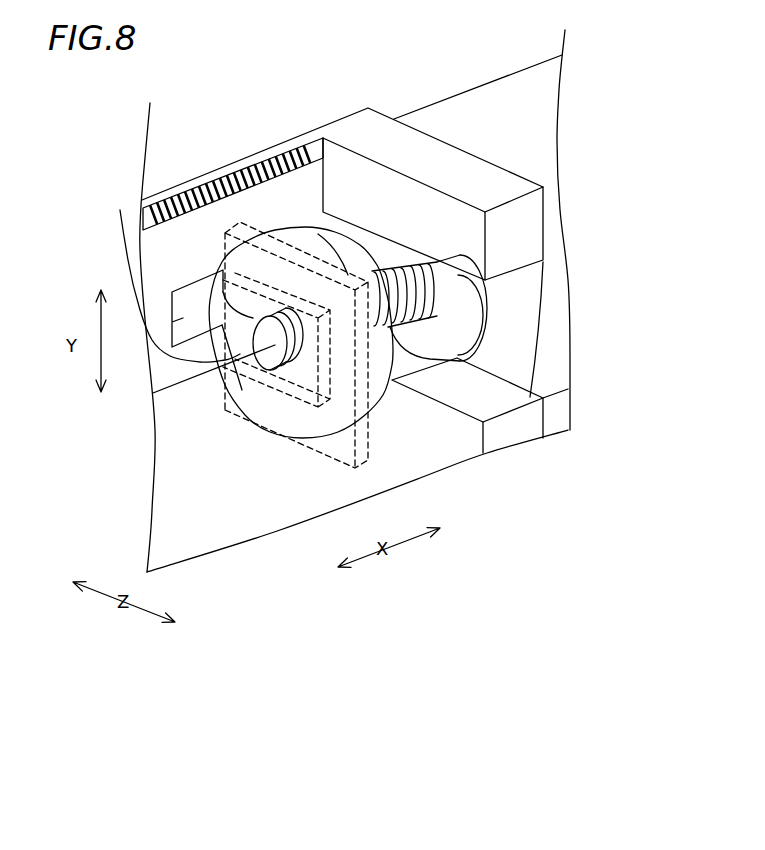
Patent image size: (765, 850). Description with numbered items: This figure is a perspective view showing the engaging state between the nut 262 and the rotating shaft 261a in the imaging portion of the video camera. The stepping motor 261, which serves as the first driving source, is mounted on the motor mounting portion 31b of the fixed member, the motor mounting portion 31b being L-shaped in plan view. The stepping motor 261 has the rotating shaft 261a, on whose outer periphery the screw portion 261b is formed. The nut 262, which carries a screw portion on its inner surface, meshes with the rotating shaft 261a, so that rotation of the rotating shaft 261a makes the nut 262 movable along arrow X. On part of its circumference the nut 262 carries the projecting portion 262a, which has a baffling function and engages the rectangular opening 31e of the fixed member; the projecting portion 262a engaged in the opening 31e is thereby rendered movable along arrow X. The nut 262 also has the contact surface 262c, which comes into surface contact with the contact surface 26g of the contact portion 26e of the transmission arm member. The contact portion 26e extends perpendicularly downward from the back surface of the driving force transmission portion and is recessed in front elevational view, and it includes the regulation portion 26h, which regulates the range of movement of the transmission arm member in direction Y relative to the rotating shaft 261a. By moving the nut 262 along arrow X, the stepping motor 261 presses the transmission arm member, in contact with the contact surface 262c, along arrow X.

The stepping motor 261 is at (495, 137).
The rotating shaft 261a is at (120, 210).
The screw portion 261b is at (398, 270).
The nut 262 is at (342, 257).
The projecting portion 262a is at (193, 303).
The contact surface 262c is at (193, 305).
The contact portion 26e is at (285, 260).
The contact surface 26g is at (327, 243).
The regulation portion 26h is at (260, 382).
The motor mounting portion 31b is at (505, 237).
The opening 31e is at (180, 330).